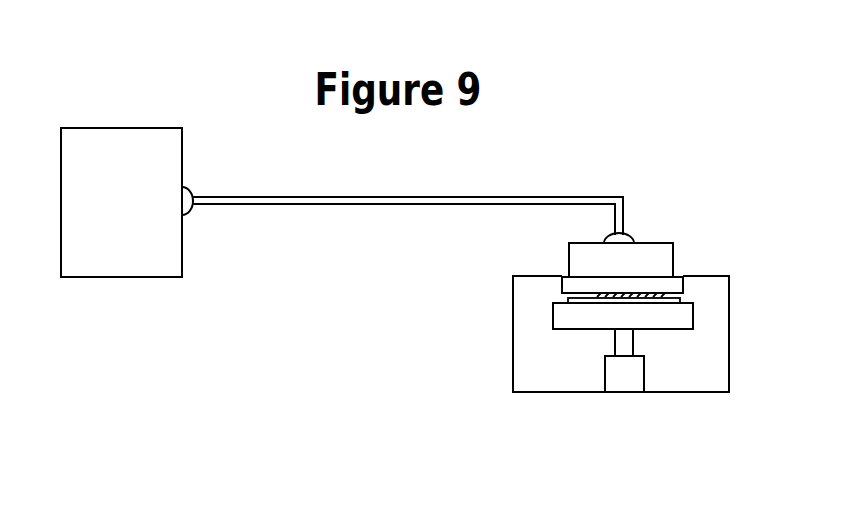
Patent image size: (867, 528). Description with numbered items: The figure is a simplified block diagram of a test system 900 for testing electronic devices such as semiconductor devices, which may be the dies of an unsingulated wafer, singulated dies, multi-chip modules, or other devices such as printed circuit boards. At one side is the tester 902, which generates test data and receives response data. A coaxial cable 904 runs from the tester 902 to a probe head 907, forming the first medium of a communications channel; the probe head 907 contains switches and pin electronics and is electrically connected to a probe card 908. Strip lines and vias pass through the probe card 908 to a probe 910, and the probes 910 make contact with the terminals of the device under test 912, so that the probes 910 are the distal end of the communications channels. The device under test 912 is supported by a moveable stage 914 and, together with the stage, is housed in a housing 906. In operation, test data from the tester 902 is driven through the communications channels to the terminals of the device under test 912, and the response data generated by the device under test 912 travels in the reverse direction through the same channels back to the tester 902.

The test system 900 is at (572, 152).
The tester 902 is at (123, 277).
The coaxial cable 904 is at (360, 197).
The housing 906 is at (513, 315).
The probe head 907 is at (675, 257).
The probe card 908 is at (563, 282).
The probe 910 is at (694, 293).
The device under test 912 is at (680, 302).
The moveable stage 914 is at (663, 330).